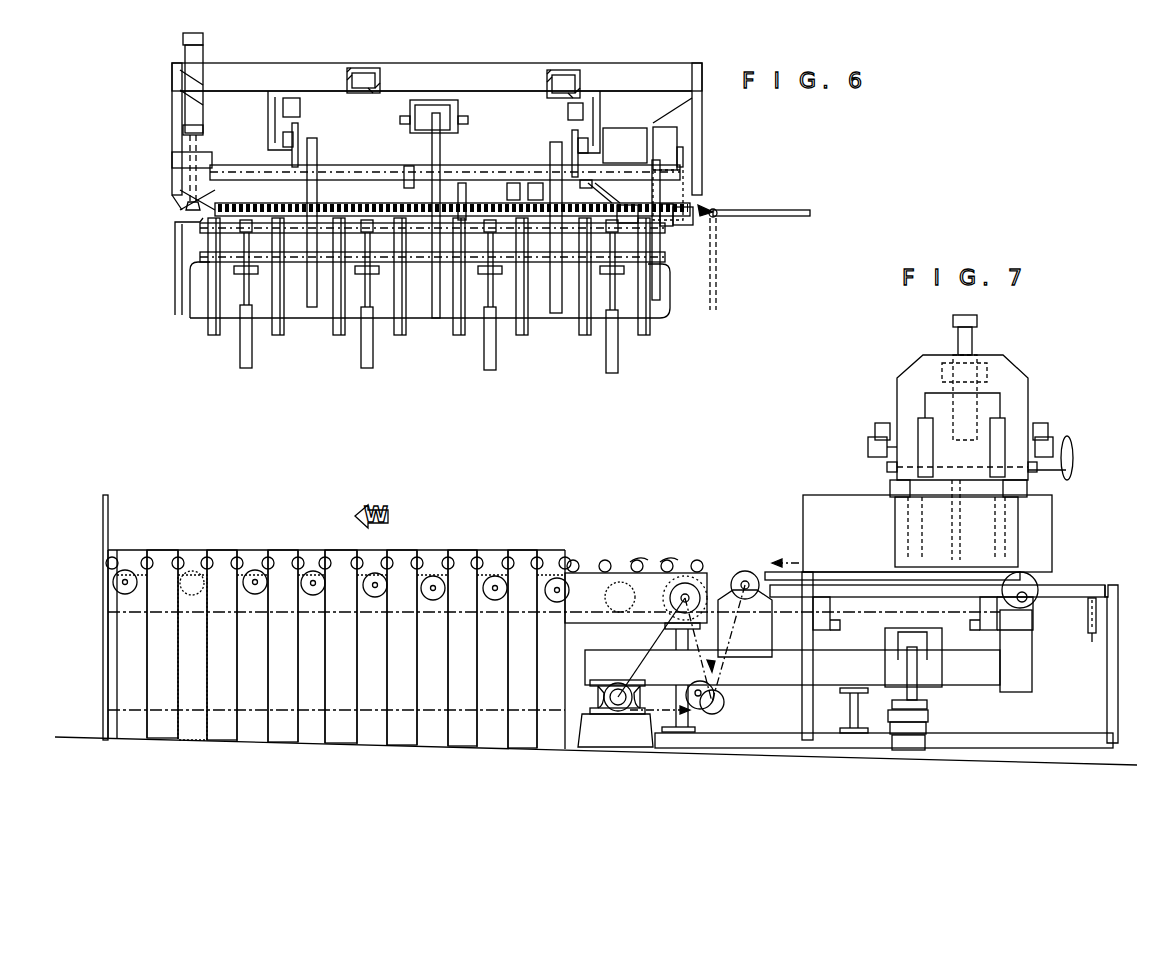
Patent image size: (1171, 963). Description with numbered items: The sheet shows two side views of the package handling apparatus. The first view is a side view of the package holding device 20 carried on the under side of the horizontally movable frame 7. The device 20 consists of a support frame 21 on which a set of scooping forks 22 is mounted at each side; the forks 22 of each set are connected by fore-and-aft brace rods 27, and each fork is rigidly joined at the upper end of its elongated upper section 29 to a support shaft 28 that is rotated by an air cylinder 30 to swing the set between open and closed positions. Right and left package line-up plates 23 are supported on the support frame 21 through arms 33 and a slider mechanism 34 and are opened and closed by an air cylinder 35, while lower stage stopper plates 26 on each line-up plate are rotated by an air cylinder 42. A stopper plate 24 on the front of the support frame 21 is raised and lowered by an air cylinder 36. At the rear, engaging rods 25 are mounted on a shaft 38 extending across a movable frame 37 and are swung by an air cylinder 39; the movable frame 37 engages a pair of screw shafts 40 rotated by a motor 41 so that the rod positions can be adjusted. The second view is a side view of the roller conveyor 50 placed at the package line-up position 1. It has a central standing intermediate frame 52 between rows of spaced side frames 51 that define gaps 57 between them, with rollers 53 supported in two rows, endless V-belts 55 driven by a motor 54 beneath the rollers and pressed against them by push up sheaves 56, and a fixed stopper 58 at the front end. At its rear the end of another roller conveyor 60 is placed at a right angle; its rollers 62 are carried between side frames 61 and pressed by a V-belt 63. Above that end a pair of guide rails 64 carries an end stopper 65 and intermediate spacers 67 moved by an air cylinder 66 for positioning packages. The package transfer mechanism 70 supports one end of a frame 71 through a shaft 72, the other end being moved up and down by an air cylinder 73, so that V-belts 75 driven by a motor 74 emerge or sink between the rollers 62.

In FIG. 7, the package line-up position 1 is at (290, 510).
In FIG. 6, the horizontally movable frame 7 is at (349, 70).
In FIG. 6, the package holding device 20 is at (512, 66).
In FIG. 6, the support frame 21 is at (472, 80).
In FIG. 6, the scooping forks 22 is at (210, 334).
In FIG. 6, the package line-up plates 23 is at (437, 320).
In FIG. 6, the stopper plate 24 is at (175, 258).
In FIG. 6, the engaging rods 25 is at (785, 216).
In FIG. 6, the lower stage stopper plates 26 is at (247, 368).
In FIG. 6, the brace rods 27 is at (464, 218).
In FIG. 6, the support shaft 28 is at (463, 166).
In FIG. 6, the upper section 29 is at (190, 202).
In FIG. 6, the air cylinder 30 is at (432, 100).
In FIG. 6, the arms 33 is at (550, 150).
In FIG. 6, the slider mechanism 34 is at (302, 138).
In FIG. 6, the air cylinder 35 is at (300, 107).
In FIG. 6, the air cylinder 36 is at (183, 40).
In FIG. 6, the movable frame 37 is at (630, 207).
In FIG. 6, the shaft 38 is at (716, 211).
In FIG. 6, the air cylinder 39 is at (510, 191).
In FIG. 6, the screw shafts 40 is at (670, 224).
In FIG. 6, the motor 41 is at (630, 142).
In FIG. 6, the air cylinder 42 is at (262, 204).
In FIG. 7, the roller conveyor 50 is at (428, 518).
In FIG. 7, the side frames 51 is at (117, 562).
In FIG. 7, the intermediate frame 52 is at (192, 565).
In FIG. 7, the rollers 53 is at (298, 560).
In FIG. 7, the motor 54 is at (715, 700).
In FIG. 7, the V-belts 55 is at (240, 603).
In FIG. 7, the push up sheaves 56 is at (313, 596).
In FIG. 7, the gaps 57 is at (178, 655).
In FIG. 7, the fixed stopper 58 is at (103, 505).
In FIG. 7, the roller conveyor 60 is at (1098, 542).
In FIG. 7, the side frames 61 is at (800, 622).
In FIG. 7, the rollers 62 is at (1072, 585).
In FIG. 7, the V-belt 63 is at (1092, 642).
In FIG. 7, the guide rails 64 is at (868, 447).
In FIG. 7, the end stopper 65 is at (810, 495).
In FIG. 7, the air cylinder 66 is at (977, 323).
In FIG. 7, the intermediate spacers 67 is at (895, 542).
In FIG. 7, the package transfer mechanism 70 is at (742, 520).
In FIG. 7, the frame 71 is at (1015, 694).
In FIG. 7, the shaft 72 is at (618, 715).
In FIG. 7, the air cylinder 73 is at (928, 718).
In FIG. 7, the motor 74 is at (714, 714).
In FIG. 7, the V-belts 75 is at (858, 610).